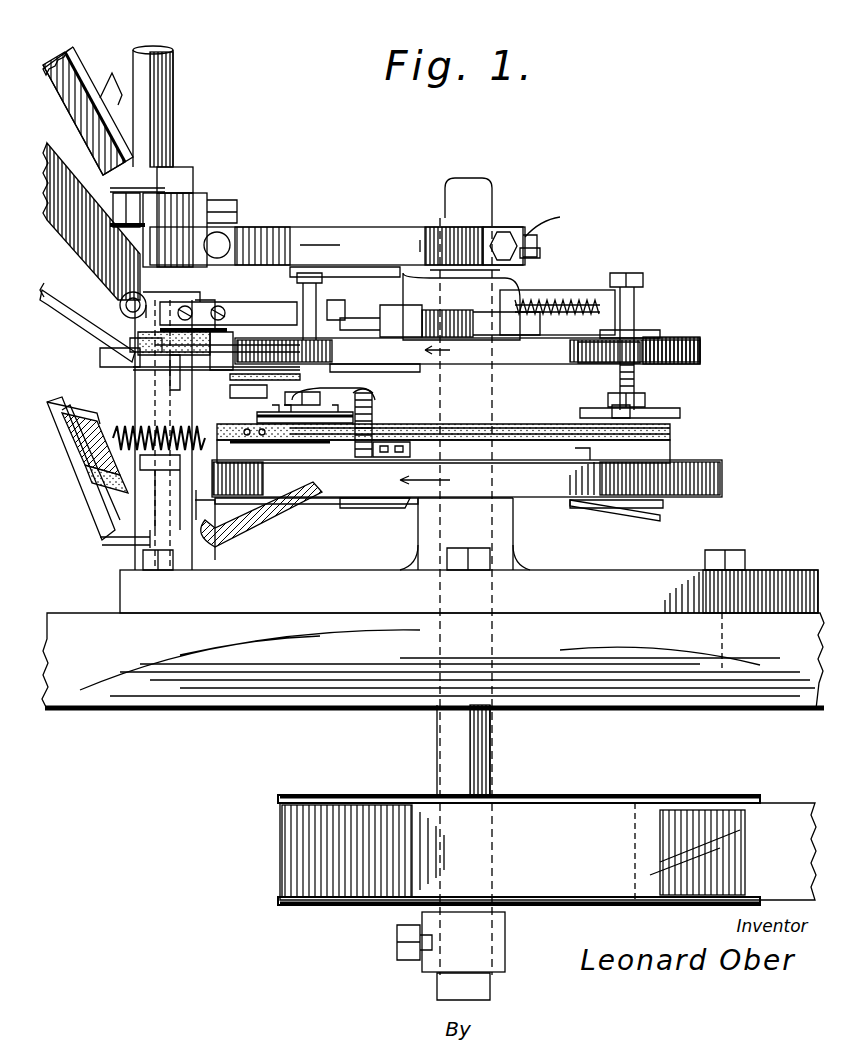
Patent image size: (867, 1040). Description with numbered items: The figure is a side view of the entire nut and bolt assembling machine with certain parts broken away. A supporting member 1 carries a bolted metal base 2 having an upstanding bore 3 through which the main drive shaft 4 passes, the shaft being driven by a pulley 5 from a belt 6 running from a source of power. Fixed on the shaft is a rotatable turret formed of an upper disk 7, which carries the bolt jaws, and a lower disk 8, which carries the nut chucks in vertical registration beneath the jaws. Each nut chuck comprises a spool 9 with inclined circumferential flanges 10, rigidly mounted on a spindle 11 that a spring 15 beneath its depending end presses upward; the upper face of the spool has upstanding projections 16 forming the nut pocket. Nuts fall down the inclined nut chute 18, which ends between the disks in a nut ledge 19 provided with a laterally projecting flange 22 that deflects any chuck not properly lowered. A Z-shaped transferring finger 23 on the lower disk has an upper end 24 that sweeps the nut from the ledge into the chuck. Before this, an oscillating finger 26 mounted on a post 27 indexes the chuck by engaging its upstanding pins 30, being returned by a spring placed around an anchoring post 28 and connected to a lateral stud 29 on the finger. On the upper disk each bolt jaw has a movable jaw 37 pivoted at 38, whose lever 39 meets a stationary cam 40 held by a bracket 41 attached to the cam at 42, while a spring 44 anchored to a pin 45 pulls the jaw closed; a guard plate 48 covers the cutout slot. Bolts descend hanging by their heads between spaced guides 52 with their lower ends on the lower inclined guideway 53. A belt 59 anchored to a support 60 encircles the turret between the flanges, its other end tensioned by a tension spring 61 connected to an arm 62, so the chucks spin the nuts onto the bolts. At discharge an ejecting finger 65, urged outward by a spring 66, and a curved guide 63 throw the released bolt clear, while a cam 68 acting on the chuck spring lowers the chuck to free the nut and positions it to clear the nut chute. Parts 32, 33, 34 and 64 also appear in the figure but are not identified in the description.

The supporting member 1 is at (627, 709).
The metal base 2 is at (748, 580).
The upstanding bore 3 is at (507, 557).
The main drive shaft 4 is at (470, 190).
The pulley 5 is at (598, 797).
The belt 6 is at (672, 822).
The upper disk 7 is at (702, 353).
The lower disk 8 is at (718, 470).
The spool 9 is at (690, 412).
The inclined circumferential flanges 10 is at (675, 420).
The spindle 11 is at (665, 436).
The spring 15 is at (352, 508).
The upstanding projections 16 is at (702, 343).
The nut chute 18 is at (47, 292).
The nut ledge 19 is at (258, 458).
The laterally projecting flange 22 is at (308, 272).
The Z-shaped transferring finger 23 is at (403, 450).
The upper end of transferring finger 24 is at (395, 478).
The oscillating finger 26 is at (212, 540).
The post 27 is at (197, 174).
The anchoring post 28 is at (160, 64).
The lateral stud 29 is at (112, 430).
The upstanding pins 30 is at (650, 338).
The foot 32 is at (100, 538).
The bracket 33 is at (125, 548).
The post 34 is at (150, 540).
The movable jaw 37 is at (360, 247).
The pivot of movable jaw 38 is at (395, 308).
The lever 39 is at (500, 255).
The cam 40 is at (520, 287).
The bracket 41 is at (373, 230).
The bracket attachment to cam 42 is at (562, 217).
The spring 44 is at (560, 298).
The pin 45 is at (633, 277).
The guard plate 48 is at (335, 300).
The spaced guides 52 is at (87, 118).
The lower inclined guideway 53 is at (77, 178).
The belt 59 is at (530, 416).
The support 60 is at (130, 470).
The tension spring 61 is at (100, 490).
The arm 62 is at (110, 433).
The curved guide 63 is at (262, 322).
The lever 64 is at (250, 303).
The ejecting finger 65 is at (323, 370).
The spring 66 is at (130, 350).
The cam 68 is at (228, 540).